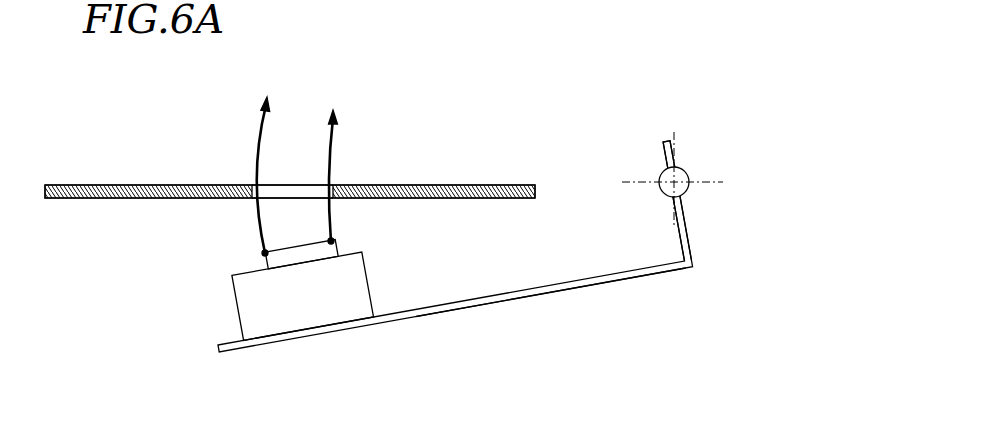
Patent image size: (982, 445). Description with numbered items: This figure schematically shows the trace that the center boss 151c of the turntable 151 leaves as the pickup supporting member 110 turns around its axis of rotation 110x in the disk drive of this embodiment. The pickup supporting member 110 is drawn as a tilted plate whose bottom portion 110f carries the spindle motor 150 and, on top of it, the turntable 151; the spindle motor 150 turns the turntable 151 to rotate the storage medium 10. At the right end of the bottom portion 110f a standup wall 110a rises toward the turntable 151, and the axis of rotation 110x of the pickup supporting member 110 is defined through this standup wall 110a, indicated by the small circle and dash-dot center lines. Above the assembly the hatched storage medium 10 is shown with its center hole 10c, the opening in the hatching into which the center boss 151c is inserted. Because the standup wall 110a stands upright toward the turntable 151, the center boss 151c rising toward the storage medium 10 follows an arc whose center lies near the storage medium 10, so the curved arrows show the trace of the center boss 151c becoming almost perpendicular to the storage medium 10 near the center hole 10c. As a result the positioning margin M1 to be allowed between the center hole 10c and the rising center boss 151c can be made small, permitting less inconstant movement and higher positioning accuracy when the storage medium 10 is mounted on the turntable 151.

The storage medium 10 is at (487, 185).
The center hole 10c is at (334, 184).
The positioning margin M1 is at (240, 174).
The pickup supporting member 110 is at (601, 298).
The bottom portion 110f is at (500, 302).
The standup wall 110a is at (679, 244).
The axis of rotation 110x is at (672, 182).
The spindle motor 150 is at (365, 290).
The turntable 151 is at (348, 255).
The center boss 151c is at (329, 252).